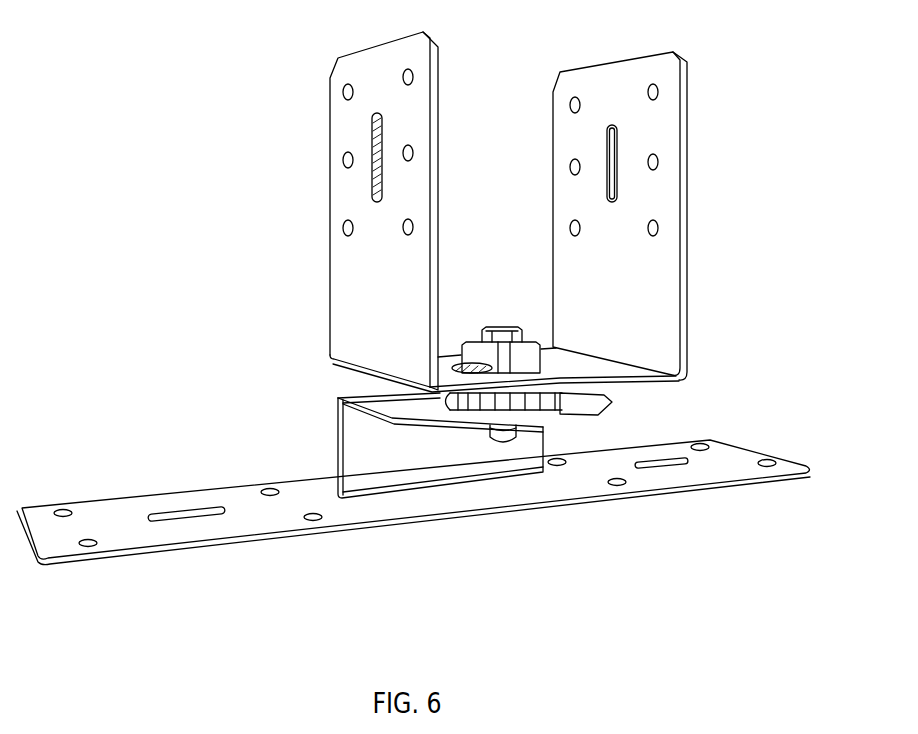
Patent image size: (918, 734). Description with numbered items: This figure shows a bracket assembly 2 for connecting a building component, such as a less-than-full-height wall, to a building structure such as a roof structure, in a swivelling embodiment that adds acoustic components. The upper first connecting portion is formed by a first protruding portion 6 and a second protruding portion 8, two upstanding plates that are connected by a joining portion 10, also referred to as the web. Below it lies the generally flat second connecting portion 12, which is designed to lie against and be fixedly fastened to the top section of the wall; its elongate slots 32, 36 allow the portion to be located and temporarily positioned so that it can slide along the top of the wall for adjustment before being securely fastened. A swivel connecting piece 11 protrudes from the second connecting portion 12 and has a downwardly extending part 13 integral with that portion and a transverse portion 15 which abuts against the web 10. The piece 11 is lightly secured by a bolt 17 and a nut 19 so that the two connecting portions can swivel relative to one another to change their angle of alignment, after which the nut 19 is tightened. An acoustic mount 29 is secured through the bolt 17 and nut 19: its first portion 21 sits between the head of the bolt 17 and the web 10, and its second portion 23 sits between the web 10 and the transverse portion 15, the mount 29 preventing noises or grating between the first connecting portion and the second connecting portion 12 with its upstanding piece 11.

The bracket assembly 2 is at (188, 200).
The first protruding portion 6 is at (332, 100).
The second protruding portion 8 is at (690, 115).
The joining portion 10 is at (674, 380).
The swivel connecting piece 11 is at (336, 426).
The second connecting portion 12 is at (290, 537).
The downwardly extending part 13 is at (395, 465).
The transverse portion 15 is at (352, 396).
The bolt 17 is at (497, 327).
The nut 19 is at (487, 432).
The first portion of the acoustic mount 21 is at (462, 341).
The second portion of the acoustic mount 23 is at (600, 396).
The acoustic mount 29 is at (536, 342).
The elongate slot 32 is at (665, 468).
The elongate slot 36 is at (176, 522).